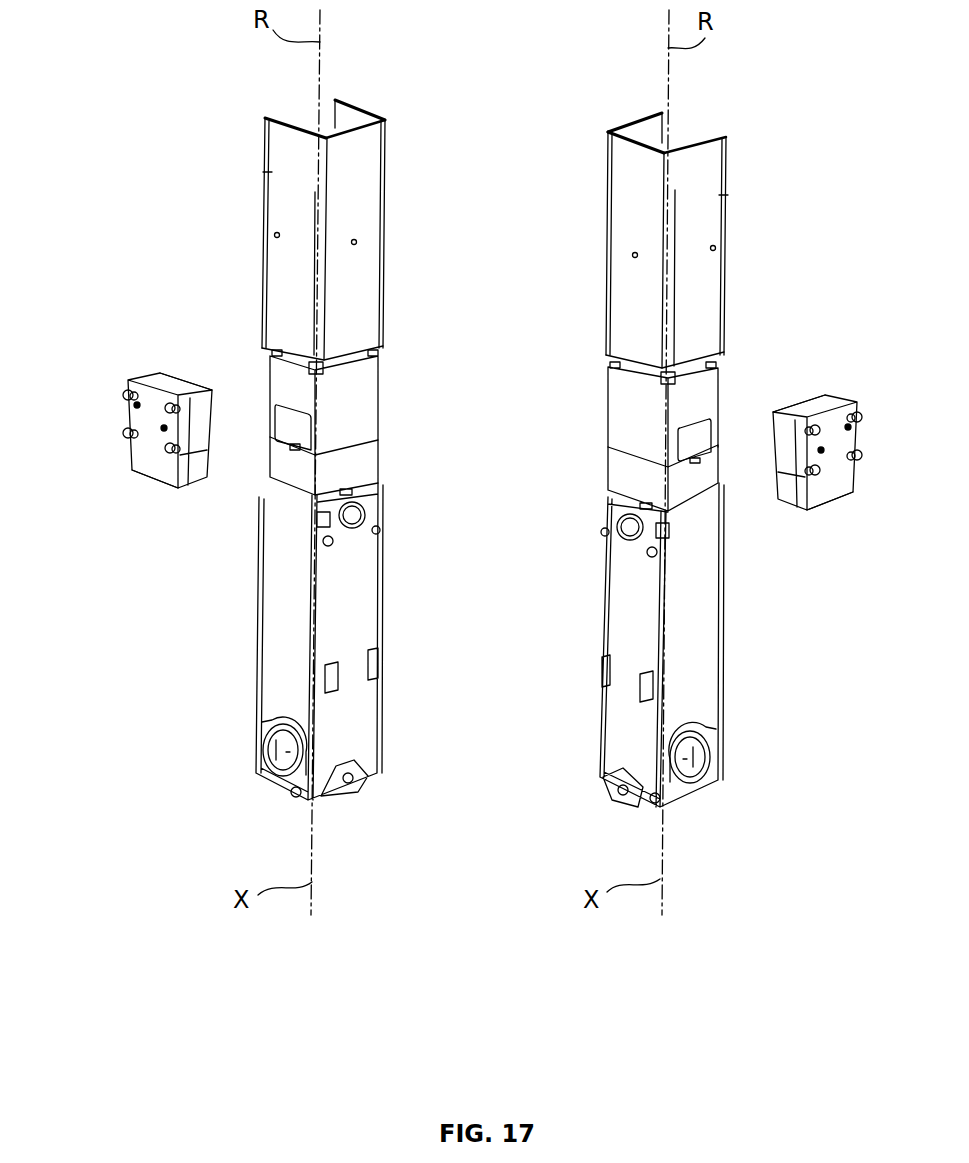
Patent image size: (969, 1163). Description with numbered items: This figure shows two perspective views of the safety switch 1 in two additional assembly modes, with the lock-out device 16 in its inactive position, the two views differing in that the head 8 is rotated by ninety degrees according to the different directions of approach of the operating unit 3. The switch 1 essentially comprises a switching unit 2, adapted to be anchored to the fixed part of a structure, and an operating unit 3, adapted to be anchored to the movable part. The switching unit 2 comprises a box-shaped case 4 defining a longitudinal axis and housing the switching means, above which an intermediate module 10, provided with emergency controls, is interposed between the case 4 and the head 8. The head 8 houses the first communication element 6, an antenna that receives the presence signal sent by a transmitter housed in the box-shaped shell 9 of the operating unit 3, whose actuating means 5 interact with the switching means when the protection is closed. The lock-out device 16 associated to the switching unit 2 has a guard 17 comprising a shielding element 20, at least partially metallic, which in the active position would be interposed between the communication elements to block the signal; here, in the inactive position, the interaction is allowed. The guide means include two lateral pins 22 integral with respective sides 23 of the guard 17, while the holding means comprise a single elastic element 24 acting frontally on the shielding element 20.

The safety switch 1 is at (112, 108).
The switching unit 2 is at (403, 736).
The operating unit 3 is at (113, 370).
The box-shaped case 4 is at (272, 642).
The actuating means 5 is at (180, 364).
The first communication element 6 is at (286, 425).
The head 8 is at (372, 398).
The box-shaped shell 9 is at (135, 470).
The intermediate module 10 is at (372, 463).
The lock-out device 16 is at (266, 108).
The guard 17 is at (388, 123).
The shielding element 20 is at (370, 190).
The lateral pins 22 is at (275, 235).
The sides 23 is at (276, 172).
The elastic element 24 is at (357, 245).